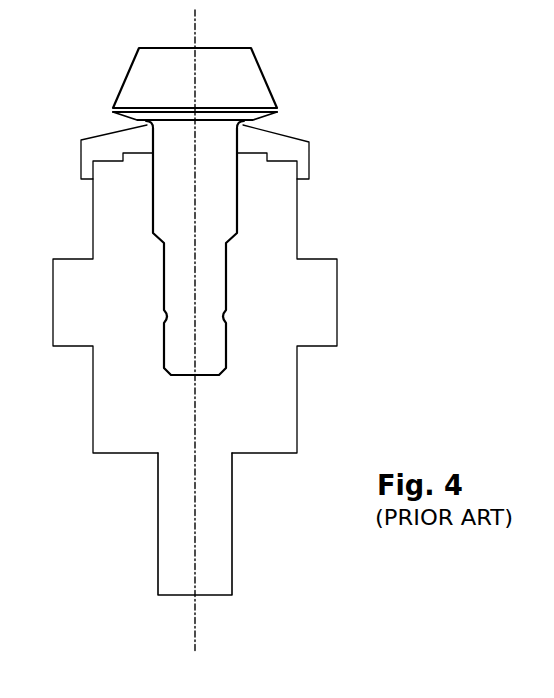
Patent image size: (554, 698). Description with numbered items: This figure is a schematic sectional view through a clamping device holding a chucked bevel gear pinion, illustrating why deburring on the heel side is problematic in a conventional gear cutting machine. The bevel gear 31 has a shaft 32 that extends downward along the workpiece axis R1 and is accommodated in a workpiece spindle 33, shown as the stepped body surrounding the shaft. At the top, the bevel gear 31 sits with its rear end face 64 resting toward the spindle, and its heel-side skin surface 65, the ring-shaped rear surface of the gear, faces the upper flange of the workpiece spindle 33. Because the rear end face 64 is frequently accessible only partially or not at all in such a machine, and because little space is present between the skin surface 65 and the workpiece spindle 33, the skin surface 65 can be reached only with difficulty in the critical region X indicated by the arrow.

The bevel gear 31 is at (233, 68).
The shaft 32 is at (212, 217).
The workpiece spindle 33 is at (222, 522).
The rear end face 64 is at (212, 125).
The heel-side skin surface 65 is at (137, 122).
The critical region X is at (297, 122).
The workpiece axis R1 is at (193, 623).